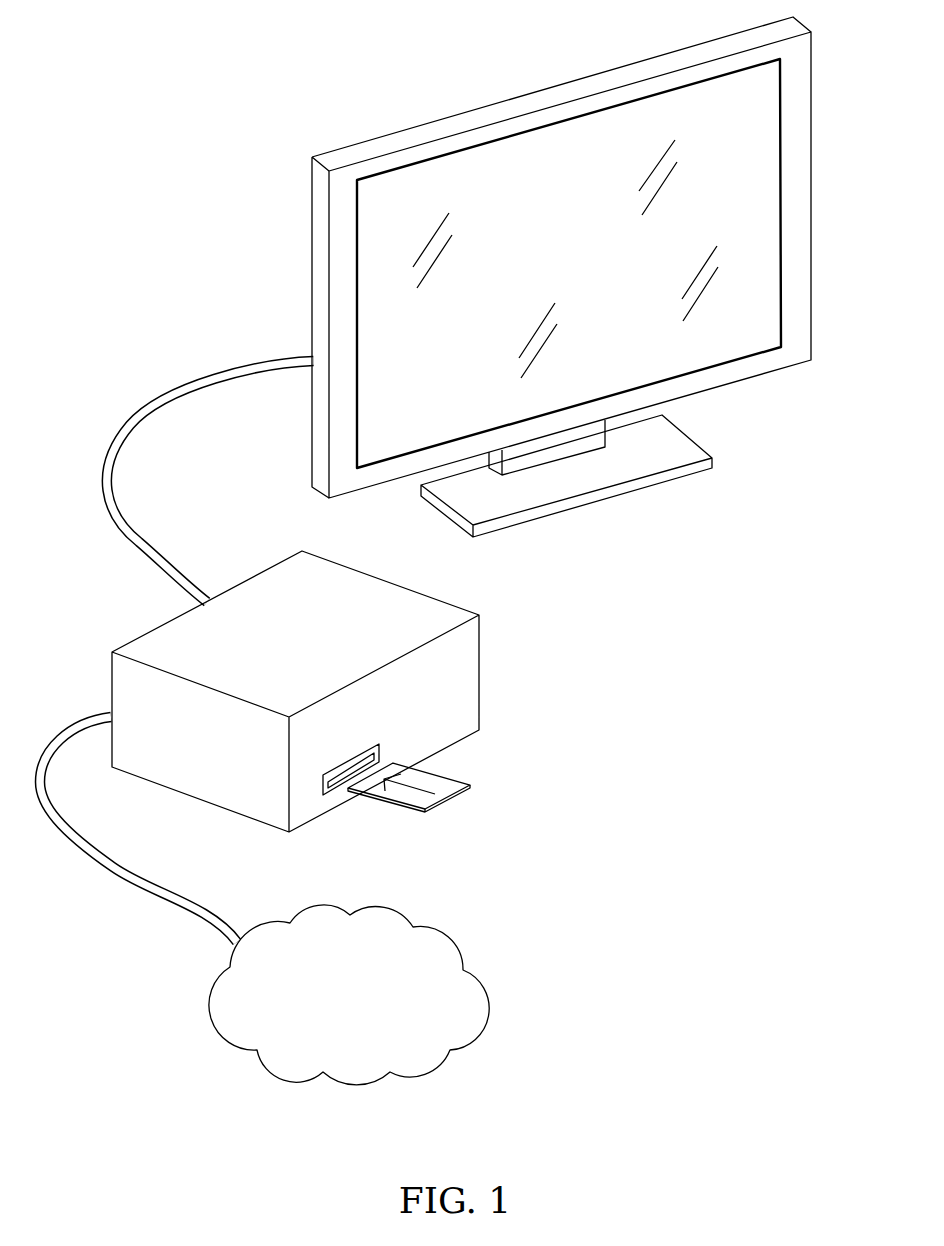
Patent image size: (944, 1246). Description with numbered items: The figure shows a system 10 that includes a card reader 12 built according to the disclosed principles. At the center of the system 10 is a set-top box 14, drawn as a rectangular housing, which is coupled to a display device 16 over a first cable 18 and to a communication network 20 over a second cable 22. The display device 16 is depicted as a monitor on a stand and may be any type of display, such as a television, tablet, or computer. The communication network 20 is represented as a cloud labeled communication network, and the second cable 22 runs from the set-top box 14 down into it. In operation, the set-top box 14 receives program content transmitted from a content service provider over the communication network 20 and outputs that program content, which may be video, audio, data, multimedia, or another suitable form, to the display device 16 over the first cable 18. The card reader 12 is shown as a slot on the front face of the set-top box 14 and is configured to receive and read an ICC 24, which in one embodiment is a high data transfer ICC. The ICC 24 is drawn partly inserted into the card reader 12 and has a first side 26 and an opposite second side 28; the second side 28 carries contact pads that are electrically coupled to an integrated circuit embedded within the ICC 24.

The system 10 is at (153, 254).
The card reader 12 is at (333, 790).
The set-top box 14 is at (435, 613).
The display device 16 is at (812, 162).
The first cable 18 is at (116, 429).
The communication network 20 is at (492, 1005).
The second cable 22 is at (108, 872).
The ICC 24 is at (447, 783).
The first side 26 is at (407, 796).
The second side 28 is at (452, 814).